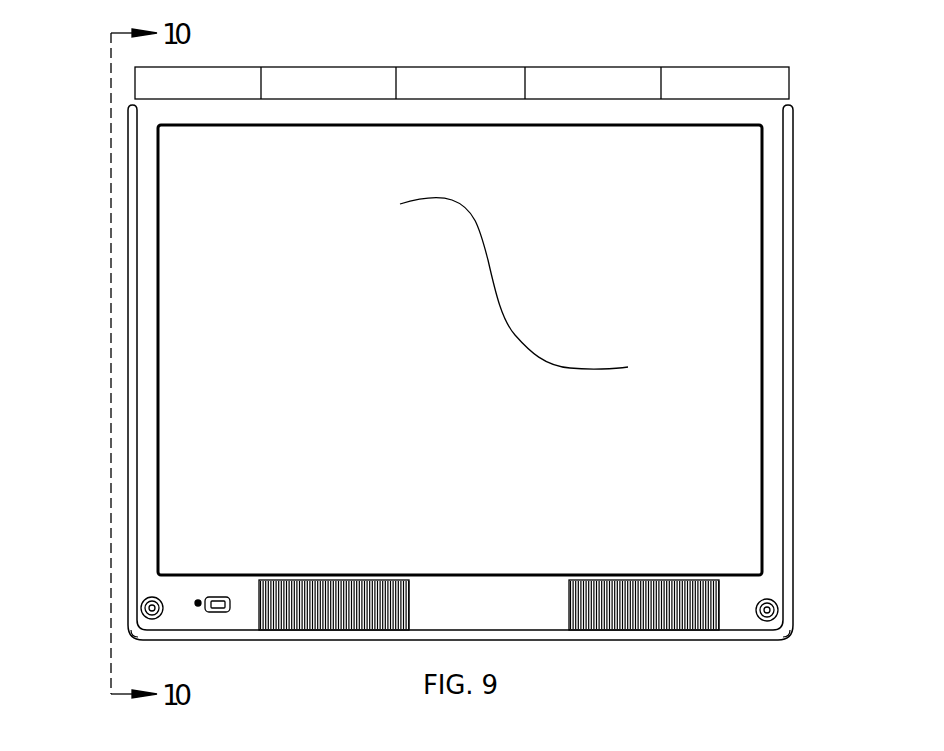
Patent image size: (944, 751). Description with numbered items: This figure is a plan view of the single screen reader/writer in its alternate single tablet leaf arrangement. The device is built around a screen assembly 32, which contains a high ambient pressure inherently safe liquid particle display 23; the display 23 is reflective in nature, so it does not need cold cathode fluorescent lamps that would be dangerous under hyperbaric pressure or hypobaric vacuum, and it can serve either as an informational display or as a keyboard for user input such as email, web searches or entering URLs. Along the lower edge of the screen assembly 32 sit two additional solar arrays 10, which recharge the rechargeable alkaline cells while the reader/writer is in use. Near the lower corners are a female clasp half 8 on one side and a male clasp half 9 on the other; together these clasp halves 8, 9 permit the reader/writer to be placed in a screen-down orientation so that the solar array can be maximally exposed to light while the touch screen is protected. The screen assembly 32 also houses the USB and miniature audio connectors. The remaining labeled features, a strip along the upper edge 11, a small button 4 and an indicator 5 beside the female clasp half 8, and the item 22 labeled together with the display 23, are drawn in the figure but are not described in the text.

The button 4 is at (228, 612).
The indicator light 5 is at (203, 608).
The female clasp half 8 is at (160, 617).
The male clasp half 9 is at (775, 617).
The solar arrays 10 is at (650, 605).
The top bar 11 is at (788, 84).
The display 22 is at (518, 350).
The liquid particle display 23 is at (515, 335).
The screen assembly 32 is at (127, 290).